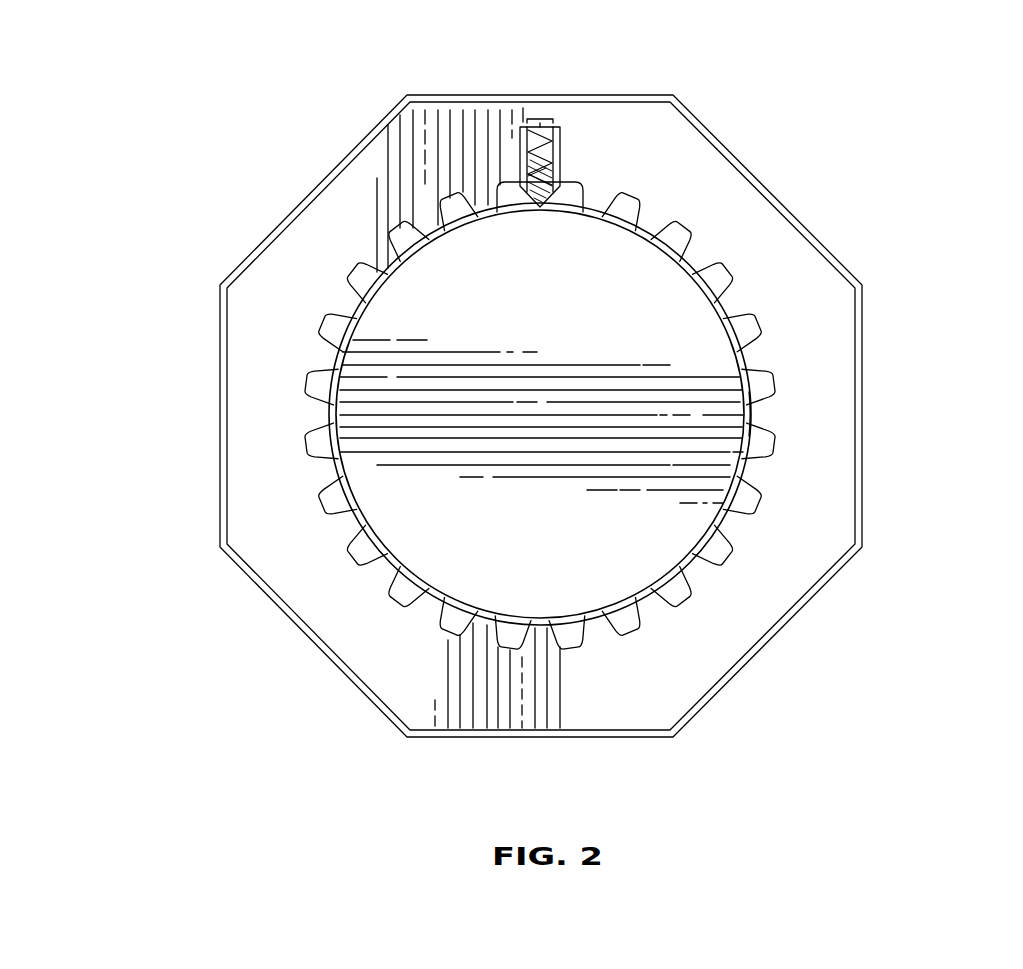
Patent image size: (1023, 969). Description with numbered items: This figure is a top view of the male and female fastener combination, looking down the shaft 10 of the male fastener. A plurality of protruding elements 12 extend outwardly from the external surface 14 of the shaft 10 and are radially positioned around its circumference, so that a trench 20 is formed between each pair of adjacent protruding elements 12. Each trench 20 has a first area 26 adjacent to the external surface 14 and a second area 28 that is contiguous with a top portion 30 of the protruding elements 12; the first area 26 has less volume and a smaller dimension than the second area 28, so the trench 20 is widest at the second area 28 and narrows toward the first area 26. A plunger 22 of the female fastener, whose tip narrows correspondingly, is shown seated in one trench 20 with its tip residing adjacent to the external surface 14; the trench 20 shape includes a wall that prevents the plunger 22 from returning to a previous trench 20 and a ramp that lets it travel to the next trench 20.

The shaft 10 is at (550, 464).
The protruding element 12 is at (750, 330).
The external surface 14 is at (323, 418).
The trench 20 is at (775, 416).
The plunger 22 is at (561, 165).
The first area 26 is at (727, 520).
The second area 28 is at (767, 477).
The top portion 30 is at (683, 602).